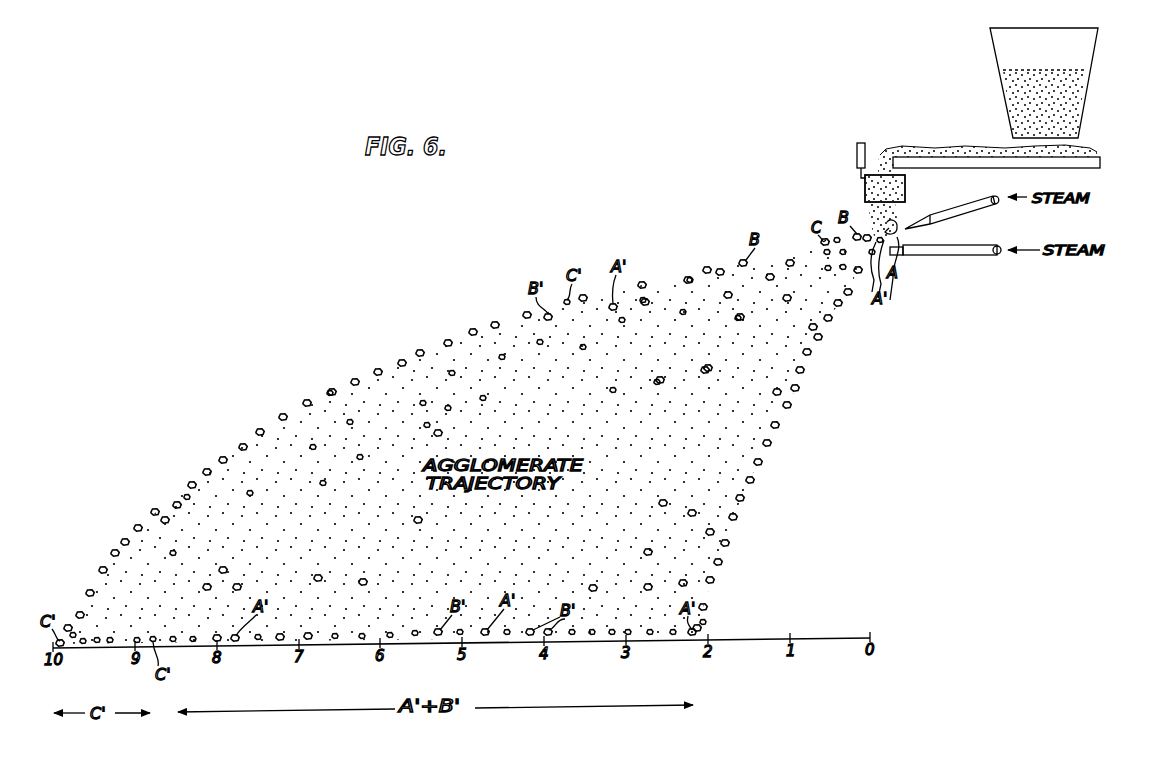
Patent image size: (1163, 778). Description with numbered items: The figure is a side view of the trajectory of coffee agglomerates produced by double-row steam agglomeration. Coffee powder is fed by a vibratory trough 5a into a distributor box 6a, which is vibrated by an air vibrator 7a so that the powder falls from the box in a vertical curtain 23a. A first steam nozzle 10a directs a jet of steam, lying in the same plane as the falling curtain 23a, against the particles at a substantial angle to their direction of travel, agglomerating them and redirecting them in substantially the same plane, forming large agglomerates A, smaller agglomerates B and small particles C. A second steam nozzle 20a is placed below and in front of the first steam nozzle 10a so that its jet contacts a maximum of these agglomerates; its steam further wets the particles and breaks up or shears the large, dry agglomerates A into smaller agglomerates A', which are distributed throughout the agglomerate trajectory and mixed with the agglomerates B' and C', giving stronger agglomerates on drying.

The vibratory trough 5a is at (1100, 162).
The distributor box 6a is at (906, 183).
The air vibrator 7a is at (865, 145).
The first steam nozzle 10a is at (924, 226).
The second steam nozzle 20a is at (906, 257).
The vertical curtain 23a is at (904, 227).